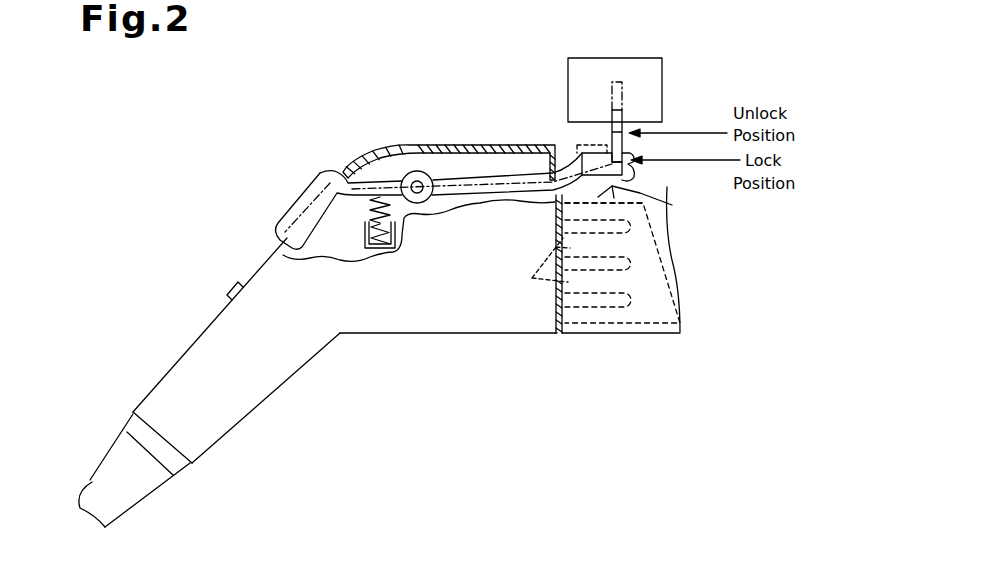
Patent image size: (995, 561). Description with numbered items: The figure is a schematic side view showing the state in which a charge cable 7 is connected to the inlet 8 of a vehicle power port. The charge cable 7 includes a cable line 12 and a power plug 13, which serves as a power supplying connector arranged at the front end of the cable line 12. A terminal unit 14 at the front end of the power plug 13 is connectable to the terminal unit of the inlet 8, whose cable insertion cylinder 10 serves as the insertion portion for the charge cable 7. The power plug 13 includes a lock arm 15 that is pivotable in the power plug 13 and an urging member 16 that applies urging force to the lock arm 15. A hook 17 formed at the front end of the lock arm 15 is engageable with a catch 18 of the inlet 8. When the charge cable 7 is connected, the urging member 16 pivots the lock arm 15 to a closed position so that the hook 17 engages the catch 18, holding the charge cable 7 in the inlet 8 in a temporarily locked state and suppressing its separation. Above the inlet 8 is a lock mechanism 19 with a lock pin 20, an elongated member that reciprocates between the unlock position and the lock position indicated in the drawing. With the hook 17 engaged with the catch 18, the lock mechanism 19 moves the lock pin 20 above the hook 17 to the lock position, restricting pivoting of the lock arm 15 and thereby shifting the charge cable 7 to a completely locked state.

The charge cable 7 is at (186, 350).
The inlet 8 is at (578, 334).
The cable insertion cylinder 10 is at (653, 334).
The cable line 12 is at (92, 490).
The power plug 13 is at (431, 334).
The terminal unit 14 is at (557, 283).
The lock arm 15 is at (508, 180).
The urging member 16 is at (390, 213).
The hook 17 is at (633, 173).
The catch 18 is at (672, 205).
The lock mechanism 19 is at (568, 92).
The lock pin 20 is at (622, 84).